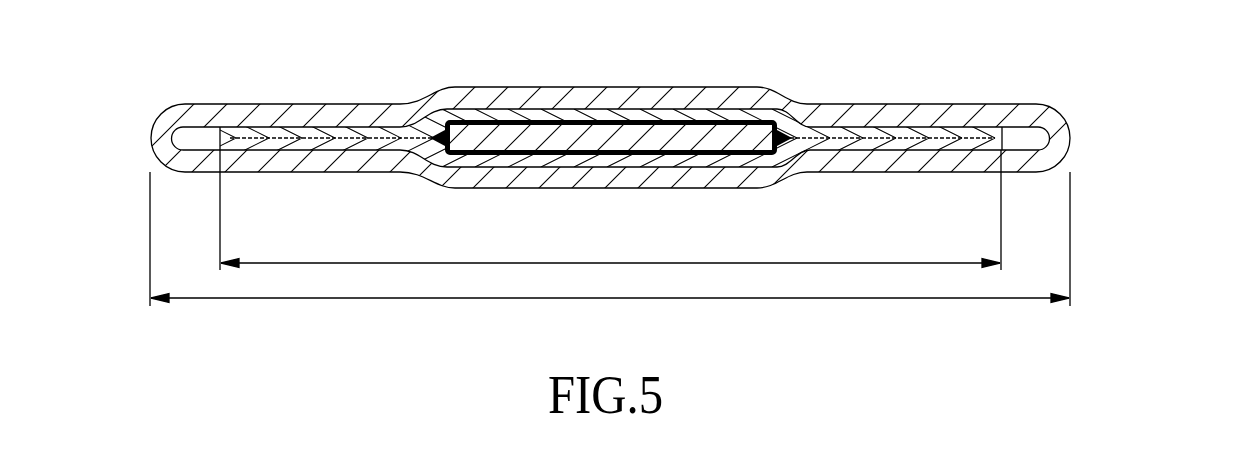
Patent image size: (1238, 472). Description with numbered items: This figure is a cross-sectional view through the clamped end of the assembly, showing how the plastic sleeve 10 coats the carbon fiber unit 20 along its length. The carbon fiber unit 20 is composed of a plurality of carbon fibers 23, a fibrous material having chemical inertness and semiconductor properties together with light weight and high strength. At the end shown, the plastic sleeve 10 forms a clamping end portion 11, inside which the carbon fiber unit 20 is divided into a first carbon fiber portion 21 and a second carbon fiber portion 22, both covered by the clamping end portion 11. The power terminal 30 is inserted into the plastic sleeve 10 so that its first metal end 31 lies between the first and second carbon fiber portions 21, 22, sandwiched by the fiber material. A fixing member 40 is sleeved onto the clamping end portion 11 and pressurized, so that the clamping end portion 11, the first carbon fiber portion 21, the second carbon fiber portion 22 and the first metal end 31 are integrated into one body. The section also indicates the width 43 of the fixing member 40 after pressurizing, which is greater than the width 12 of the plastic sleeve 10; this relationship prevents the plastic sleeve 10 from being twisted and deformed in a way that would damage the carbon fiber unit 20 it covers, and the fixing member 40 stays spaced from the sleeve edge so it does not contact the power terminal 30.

The plastic sleeve 10 is at (612, 95).
The clamping end portion 11 is at (981, 122).
The width of the plastic sleeve 12 is at (812, 262).
The carbon fiber unit 20 is at (788, 118).
The first carbon fiber portion 21 is at (589, 109).
The second carbon fiber portion 22 is at (590, 162).
The carbon fibers 23 is at (432, 132).
The power terminal 30 is at (611, 89).
The first metal end 31 is at (658, 118).
The fixing member 40 is at (1066, 100).
The width of the fixing member 43 is at (852, 298).